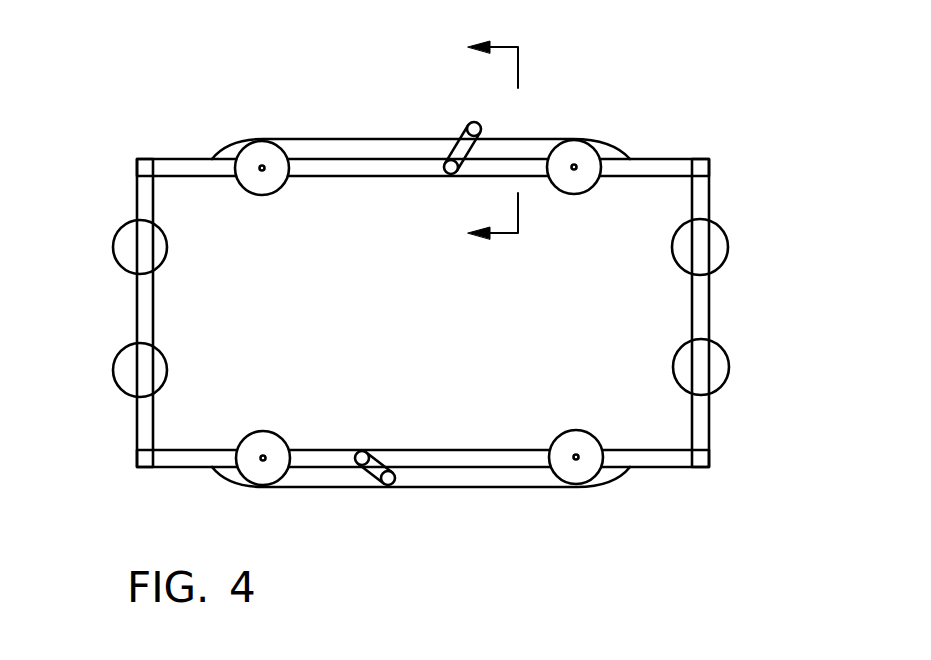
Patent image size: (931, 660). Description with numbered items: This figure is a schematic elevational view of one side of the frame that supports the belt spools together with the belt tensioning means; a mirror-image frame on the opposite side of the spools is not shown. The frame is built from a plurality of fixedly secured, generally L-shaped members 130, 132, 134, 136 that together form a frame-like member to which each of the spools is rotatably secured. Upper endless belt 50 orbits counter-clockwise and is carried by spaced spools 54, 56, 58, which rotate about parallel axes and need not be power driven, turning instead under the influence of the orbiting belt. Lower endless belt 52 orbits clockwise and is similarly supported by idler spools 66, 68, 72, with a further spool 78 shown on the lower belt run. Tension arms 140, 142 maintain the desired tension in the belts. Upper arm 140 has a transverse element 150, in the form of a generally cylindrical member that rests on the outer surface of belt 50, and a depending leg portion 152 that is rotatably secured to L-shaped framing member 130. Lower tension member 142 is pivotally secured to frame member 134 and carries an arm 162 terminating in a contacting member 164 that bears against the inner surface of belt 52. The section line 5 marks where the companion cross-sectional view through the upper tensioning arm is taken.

The section line 5- 5 is at (483, 142).
The endless belt 50 is at (360, 137).
The endless belt 52 is at (488, 488).
The spool 54 is at (577, 183).
The spool 56 is at (262, 188).
The spool 58 is at (163, 245).
The spool 66 is at (718, 370).
The spool 68 is at (576, 442).
The spool 72 is at (165, 368).
The lower belt pulley 78 is at (275, 438).
The L-shaped framing member 130 is at (665, 163).
The L-shaped member 132 is at (710, 317).
The L-shaped member 134 is at (667, 460).
The L-shaped member 136 is at (143, 307).
The tension arm 140 is at (458, 122).
The lower tension member 142 is at (362, 493).
The transverse element 150 is at (482, 127).
The depending leg portion 152 is at (453, 148).
The arm 162 is at (400, 450).
The contacting member 164 is at (393, 487).